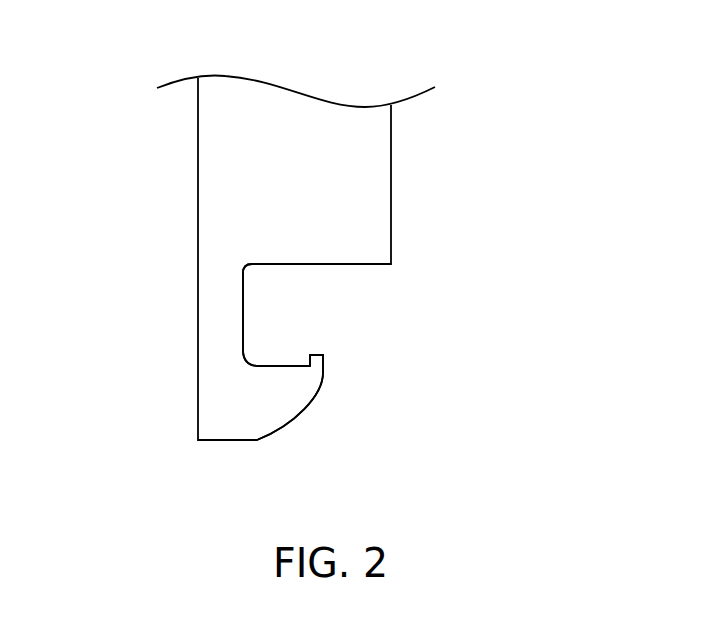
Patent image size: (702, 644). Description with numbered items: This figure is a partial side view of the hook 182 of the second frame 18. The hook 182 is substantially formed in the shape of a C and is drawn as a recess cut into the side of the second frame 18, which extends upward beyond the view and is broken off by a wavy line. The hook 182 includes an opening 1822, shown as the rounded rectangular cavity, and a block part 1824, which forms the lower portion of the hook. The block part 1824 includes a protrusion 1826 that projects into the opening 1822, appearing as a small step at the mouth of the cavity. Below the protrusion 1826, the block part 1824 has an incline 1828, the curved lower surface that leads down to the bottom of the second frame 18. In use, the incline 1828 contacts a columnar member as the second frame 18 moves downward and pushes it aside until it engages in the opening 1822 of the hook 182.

The second frame 18 is at (205, 190).
The hook 182 is at (558, 249).
The opening 1822 is at (335, 312).
The block part 1824 is at (288, 390).
The protrusion 1826 is at (320, 360).
The incline 1828 is at (288, 422).